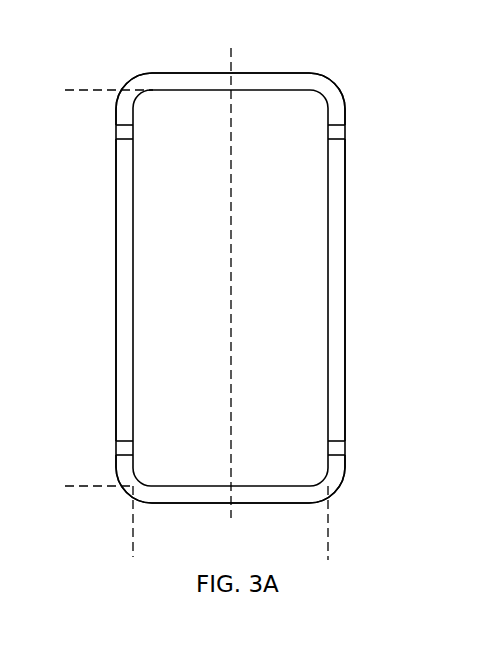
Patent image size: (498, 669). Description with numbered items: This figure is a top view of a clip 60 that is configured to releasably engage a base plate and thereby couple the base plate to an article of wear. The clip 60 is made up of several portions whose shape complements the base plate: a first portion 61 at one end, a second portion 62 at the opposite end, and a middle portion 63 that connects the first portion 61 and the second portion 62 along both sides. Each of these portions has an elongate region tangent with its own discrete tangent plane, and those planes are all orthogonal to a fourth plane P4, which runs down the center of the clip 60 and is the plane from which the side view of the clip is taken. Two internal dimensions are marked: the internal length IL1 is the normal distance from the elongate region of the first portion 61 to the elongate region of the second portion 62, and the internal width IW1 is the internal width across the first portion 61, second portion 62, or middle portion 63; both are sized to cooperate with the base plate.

The clip 60 is at (64, 59).
The first portion 61 is at (353, 73).
The second portion 62 is at (353, 451).
The middle portion 63 is at (355, 132).
The fourth plane P4 is at (232, 62).
The internal length IL1 is at (83, 92).
The internal width IW1 is at (326, 544).